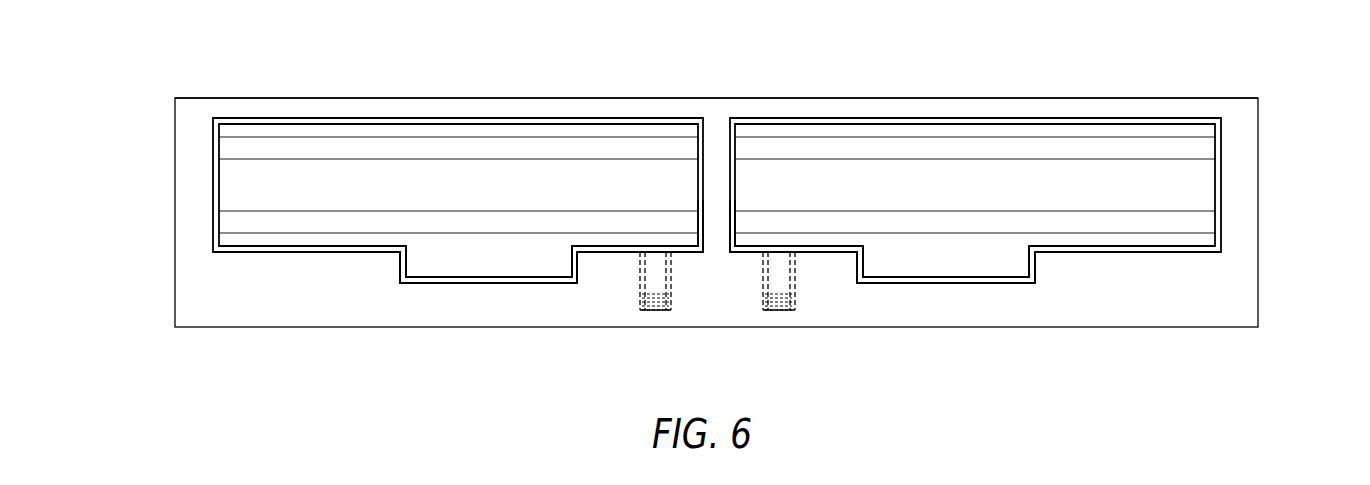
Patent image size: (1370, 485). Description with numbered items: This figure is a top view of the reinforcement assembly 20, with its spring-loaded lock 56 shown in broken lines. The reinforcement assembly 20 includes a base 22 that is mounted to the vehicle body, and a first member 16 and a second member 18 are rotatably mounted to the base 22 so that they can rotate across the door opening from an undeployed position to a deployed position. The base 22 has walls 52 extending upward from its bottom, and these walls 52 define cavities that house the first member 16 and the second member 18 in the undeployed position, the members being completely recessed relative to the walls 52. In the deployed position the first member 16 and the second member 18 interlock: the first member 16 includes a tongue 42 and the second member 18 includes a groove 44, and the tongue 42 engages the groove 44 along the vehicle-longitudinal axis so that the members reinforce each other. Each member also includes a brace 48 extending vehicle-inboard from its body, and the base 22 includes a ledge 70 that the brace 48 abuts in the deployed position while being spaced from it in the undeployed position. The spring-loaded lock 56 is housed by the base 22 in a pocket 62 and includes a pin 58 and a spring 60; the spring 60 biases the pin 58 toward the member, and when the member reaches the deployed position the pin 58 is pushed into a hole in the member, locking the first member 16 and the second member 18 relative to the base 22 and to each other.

The reinforcement assembly 20 is at (197, 357).
The base 22 is at (176, 122).
The walls 52 is at (1102, 108).
The groove 44 is at (238, 196).
The tongue 42 is at (1200, 196).
The second member 18 is at (508, 148).
The first member 16 is at (928, 148).
The brace 48 is at (433, 260).
The ledge 70 is at (605, 270).
The pin 58 is at (645, 277).
The spring-loaded lock 56 is at (645, 311).
The pocket 62 is at (762, 272).
The spring 60 is at (765, 302).